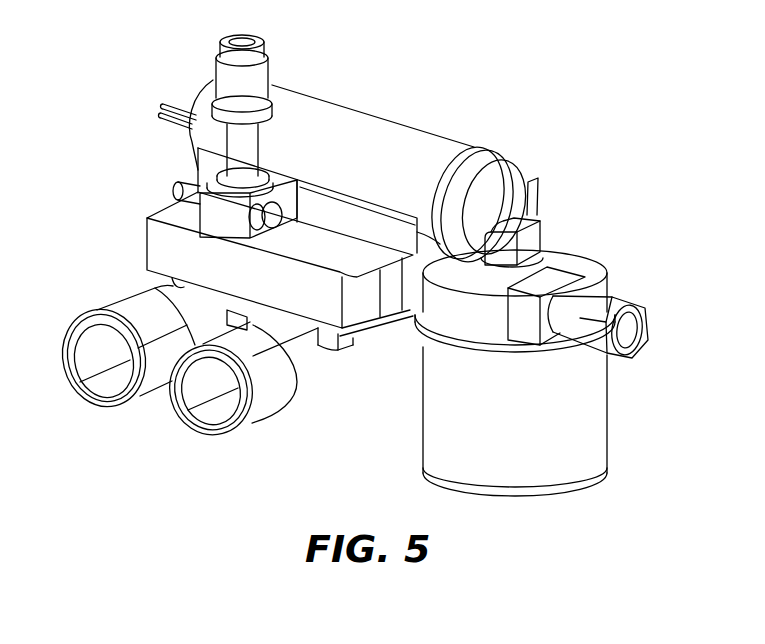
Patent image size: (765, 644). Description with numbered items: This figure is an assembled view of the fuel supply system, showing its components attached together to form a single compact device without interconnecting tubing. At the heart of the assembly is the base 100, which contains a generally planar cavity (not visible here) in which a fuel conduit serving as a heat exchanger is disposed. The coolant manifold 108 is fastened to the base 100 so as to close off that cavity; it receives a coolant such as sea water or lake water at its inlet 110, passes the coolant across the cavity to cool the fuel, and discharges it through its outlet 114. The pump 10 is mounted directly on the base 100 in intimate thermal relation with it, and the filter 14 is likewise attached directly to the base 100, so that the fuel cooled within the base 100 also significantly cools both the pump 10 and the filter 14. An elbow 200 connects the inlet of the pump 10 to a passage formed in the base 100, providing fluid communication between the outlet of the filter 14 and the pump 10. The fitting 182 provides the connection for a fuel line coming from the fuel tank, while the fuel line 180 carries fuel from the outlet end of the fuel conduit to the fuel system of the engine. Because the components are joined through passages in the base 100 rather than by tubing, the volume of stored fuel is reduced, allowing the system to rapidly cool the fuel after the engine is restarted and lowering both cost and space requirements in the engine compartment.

The pump 10 is at (413, 133).
The fuel line 180 is at (246, 146).
The elbow 200 is at (537, 226).
The base 100 is at (580, 252).
The fitting 182 is at (572, 313).
The filter 14 is at (590, 430).
The coolant manifold 108 is at (357, 330).
The outlet 114 is at (103, 387).
The inlet 110 is at (220, 413).